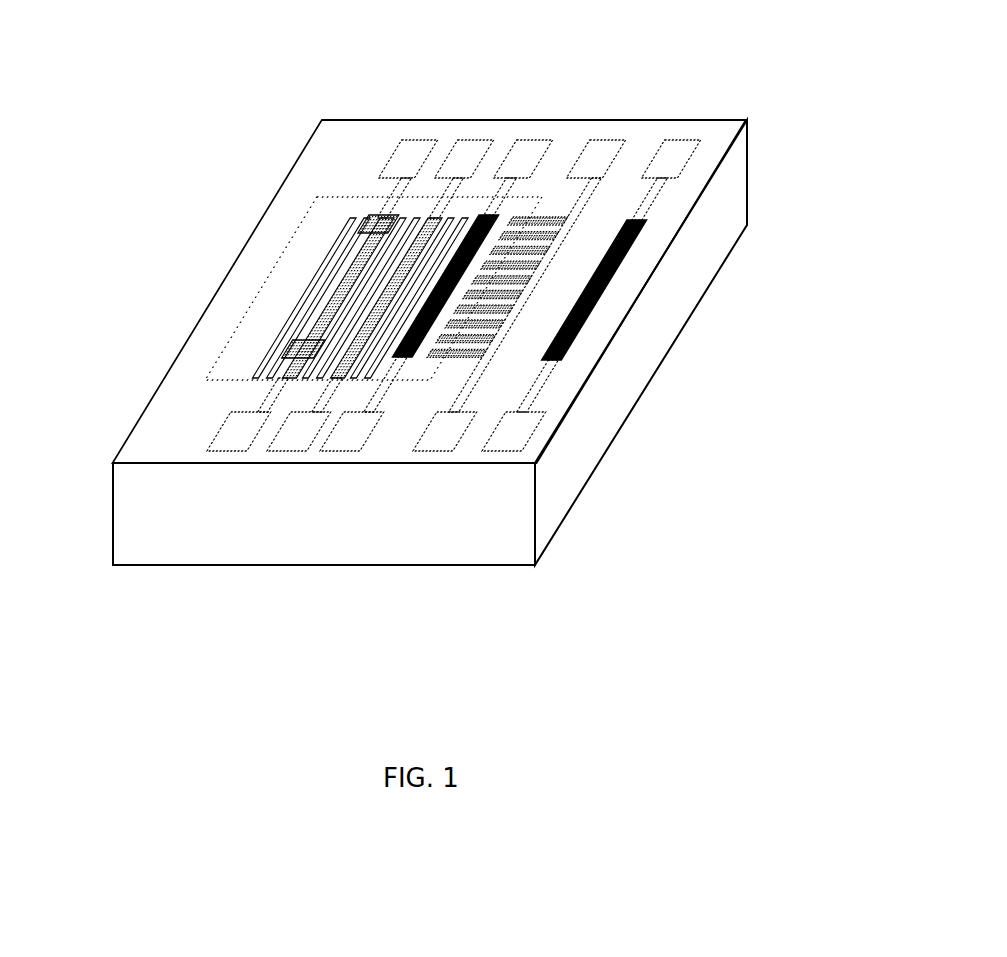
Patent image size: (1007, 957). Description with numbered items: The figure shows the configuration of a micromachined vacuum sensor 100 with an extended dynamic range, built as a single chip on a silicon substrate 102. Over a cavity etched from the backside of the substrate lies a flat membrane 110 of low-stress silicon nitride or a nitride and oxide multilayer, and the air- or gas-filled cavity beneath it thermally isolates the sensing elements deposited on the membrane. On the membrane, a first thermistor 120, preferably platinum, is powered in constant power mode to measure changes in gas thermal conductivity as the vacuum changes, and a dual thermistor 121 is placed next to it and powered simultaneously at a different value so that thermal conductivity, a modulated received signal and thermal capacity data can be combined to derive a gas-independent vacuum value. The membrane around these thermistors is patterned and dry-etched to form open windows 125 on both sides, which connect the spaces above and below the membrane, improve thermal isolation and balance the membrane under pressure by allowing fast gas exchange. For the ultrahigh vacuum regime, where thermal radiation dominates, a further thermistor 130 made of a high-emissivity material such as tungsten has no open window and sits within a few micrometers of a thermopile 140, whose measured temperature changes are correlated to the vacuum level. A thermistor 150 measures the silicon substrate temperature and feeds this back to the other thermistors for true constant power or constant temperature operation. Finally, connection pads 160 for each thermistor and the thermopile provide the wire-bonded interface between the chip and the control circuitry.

The vacuum sensor 100 is at (493, 547).
The silicon substrate 102 is at (650, 353).
The membrane 110 is at (240, 353).
The thermistor 120 is at (368, 247).
The dual thermistor 121 is at (418, 243).
The open windows 125 is at (322, 262).
The thermistor 130 is at (491, 215).
The thermopile 140 is at (560, 218).
The thermistor 150 is at (617, 277).
The connection pads 160 is at (290, 436).